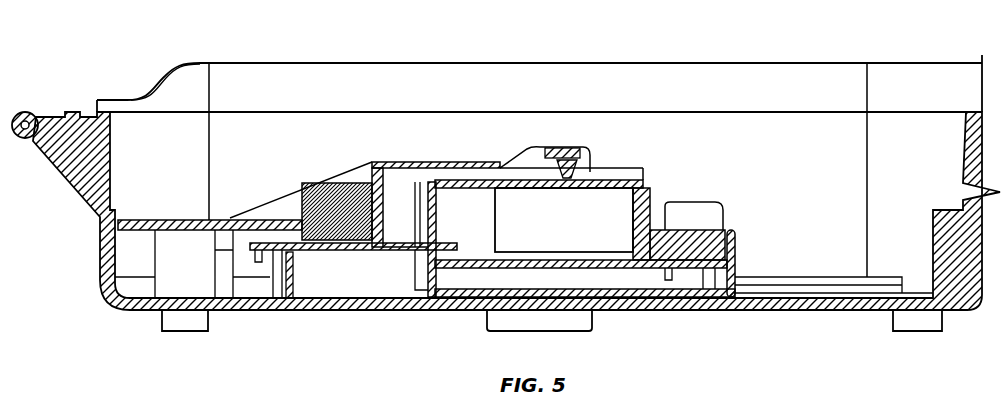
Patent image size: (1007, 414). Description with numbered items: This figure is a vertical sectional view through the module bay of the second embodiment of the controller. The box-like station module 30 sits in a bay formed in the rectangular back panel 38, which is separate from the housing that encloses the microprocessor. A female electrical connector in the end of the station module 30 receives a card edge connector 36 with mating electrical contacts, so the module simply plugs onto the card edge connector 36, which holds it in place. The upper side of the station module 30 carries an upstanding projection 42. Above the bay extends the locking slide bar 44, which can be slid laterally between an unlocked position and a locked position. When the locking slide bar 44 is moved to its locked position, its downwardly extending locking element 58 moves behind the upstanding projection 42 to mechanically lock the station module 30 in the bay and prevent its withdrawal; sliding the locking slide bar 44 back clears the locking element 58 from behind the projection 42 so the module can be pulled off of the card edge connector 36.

The station module 30 is at (602, 177).
The card edge connector 36 is at (467, 293).
The back panel 38 is at (331, 65).
The upstanding projection 42 is at (548, 180).
The locking slide bar 44 is at (553, 147).
The locking element 58 is at (573, 180).